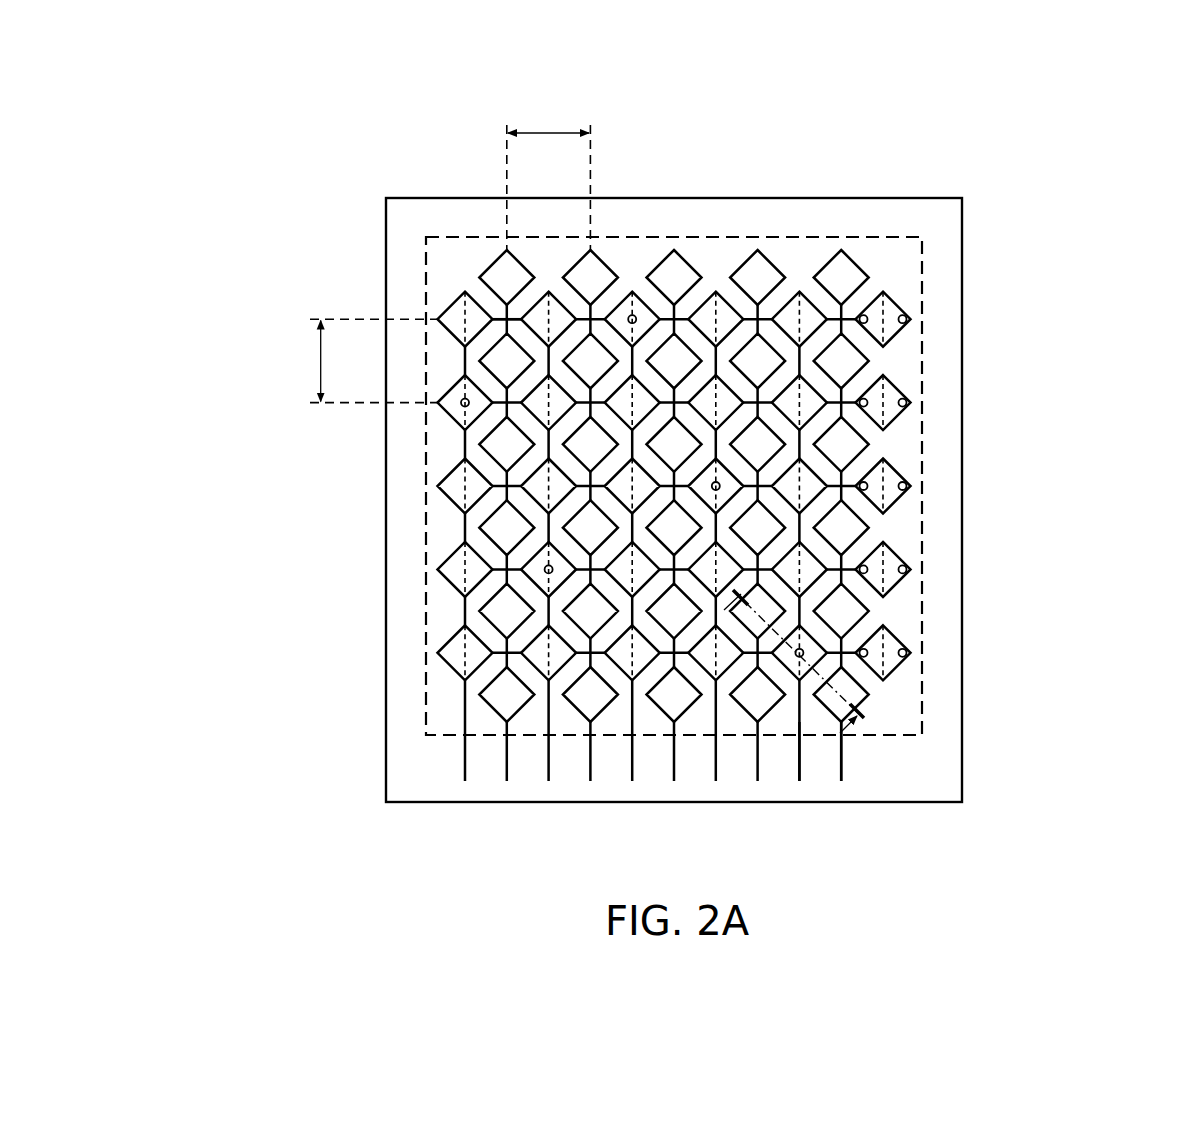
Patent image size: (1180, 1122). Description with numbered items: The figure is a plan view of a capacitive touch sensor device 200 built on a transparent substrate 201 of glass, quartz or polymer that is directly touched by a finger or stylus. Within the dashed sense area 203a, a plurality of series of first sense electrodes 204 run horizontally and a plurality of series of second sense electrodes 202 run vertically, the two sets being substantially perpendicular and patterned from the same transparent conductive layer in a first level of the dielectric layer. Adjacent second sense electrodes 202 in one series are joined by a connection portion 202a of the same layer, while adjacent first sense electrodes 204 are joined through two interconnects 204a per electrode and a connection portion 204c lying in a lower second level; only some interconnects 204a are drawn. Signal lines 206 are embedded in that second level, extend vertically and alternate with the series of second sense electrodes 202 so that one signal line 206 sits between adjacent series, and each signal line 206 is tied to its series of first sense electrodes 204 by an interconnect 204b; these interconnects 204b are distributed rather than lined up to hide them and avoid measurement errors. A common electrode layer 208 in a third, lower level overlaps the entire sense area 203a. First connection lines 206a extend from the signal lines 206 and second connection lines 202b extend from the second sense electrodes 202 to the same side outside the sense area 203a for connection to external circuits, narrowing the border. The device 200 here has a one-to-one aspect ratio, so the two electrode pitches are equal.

The capacitive touch sensor device 200 is at (316, 146).
The transparent substrate 201 is at (963, 203).
The series of second sense electrodes 202 is at (840, 266).
The connection portion 202a is at (843, 310).
The second connection line 202b is at (844, 767).
The sense area 203a is at (800, 486).
The common electrode layer 208 is at (922, 263).
The series of first sense electrodes 204 is at (618, 397).
The interconnect 204a is at (864, 324).
The interconnect 204b is at (632, 313).
The connection portion 204c is at (500, 317).
The signal line 206 is at (793, 361).
The first connection line 206a is at (799, 768).